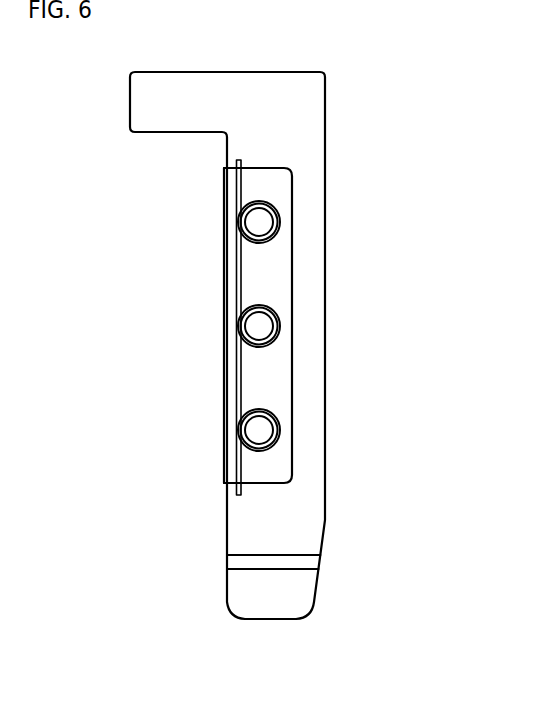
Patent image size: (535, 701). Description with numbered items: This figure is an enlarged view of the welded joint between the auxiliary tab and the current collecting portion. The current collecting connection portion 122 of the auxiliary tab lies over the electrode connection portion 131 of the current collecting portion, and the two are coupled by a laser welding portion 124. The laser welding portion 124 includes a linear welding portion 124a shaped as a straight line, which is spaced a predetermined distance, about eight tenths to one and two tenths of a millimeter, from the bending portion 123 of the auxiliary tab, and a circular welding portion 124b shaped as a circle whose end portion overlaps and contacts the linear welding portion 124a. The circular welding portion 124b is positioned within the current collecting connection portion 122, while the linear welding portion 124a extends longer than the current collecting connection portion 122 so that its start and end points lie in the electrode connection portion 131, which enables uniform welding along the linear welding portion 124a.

The current collecting connection portion 122 is at (253, 263).
The bending portion 123 is at (224, 468).
The laser welding portion 124 is at (174, 327).
The linear welding portion 124a is at (240, 384).
The circular welding portion 124b is at (260, 306).
The electrode connection portion 131 is at (315, 500).